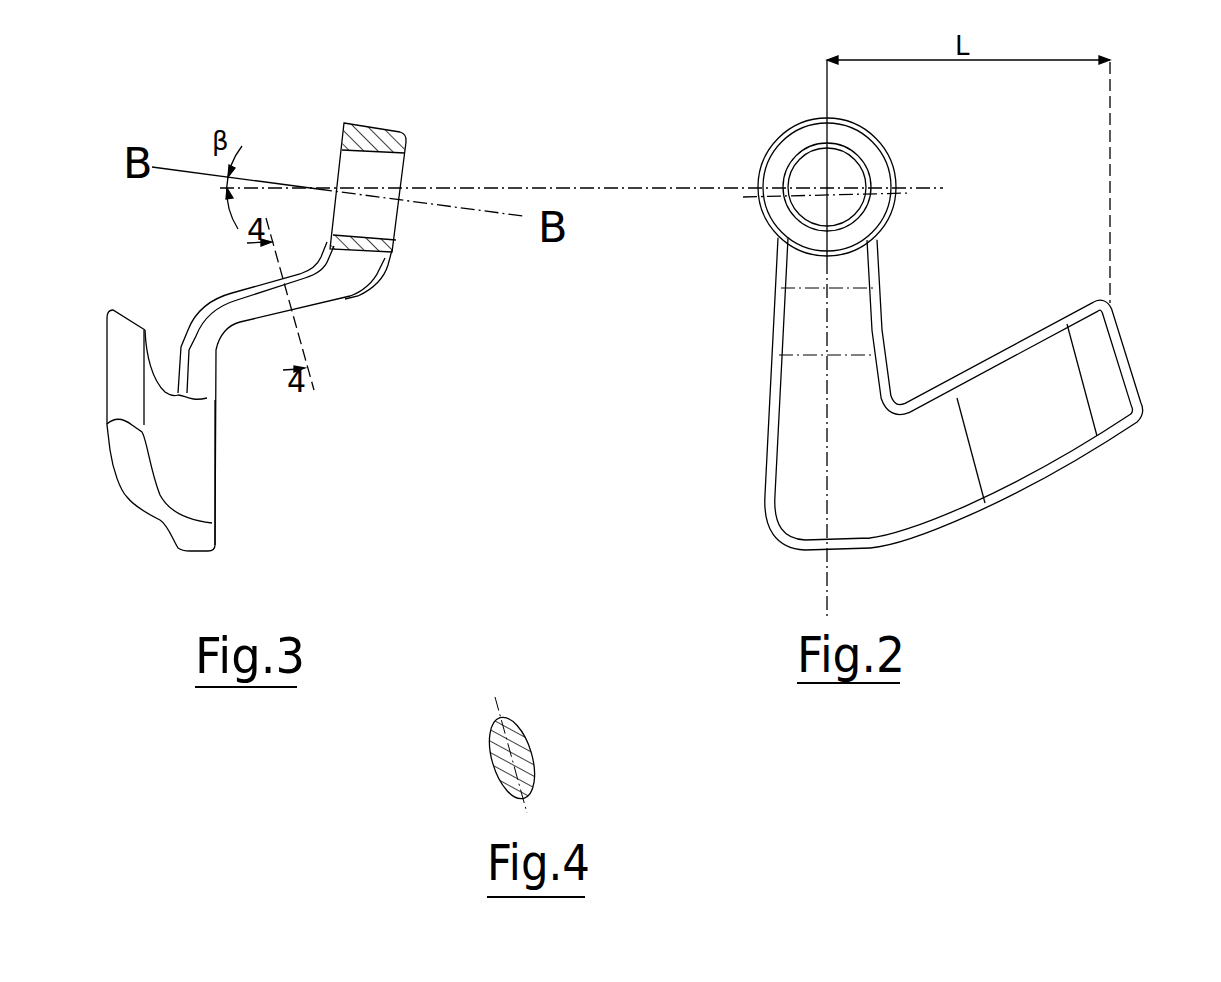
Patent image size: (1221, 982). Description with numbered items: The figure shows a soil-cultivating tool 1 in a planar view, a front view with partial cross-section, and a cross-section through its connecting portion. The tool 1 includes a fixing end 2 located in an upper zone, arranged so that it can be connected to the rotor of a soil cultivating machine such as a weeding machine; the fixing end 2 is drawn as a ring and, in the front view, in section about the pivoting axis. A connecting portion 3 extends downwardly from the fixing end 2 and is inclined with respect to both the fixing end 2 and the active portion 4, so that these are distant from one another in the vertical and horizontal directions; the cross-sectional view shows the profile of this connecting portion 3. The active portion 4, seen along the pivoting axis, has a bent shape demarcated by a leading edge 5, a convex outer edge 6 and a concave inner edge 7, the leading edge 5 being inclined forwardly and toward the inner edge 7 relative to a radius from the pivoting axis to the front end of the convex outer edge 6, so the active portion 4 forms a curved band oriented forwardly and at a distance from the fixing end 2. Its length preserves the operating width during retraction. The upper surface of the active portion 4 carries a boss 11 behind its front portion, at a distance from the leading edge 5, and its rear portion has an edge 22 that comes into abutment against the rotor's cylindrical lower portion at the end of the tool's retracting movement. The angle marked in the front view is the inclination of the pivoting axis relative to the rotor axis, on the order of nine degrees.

In FIG. 3, the tool 1 is at (180, 304).
In FIG. 2, the tool 1 is at (954, 255).
In FIG. 3, the fixing end 2 is at (393, 133).
In FIG. 2, the fixing end 2 is at (872, 165).
In FIG. 3, the connecting portion 3 is at (332, 281).
In FIG. 2, the connecting portion 3 is at (795, 320).
In FIG. 4, the connecting portion 3 is at (522, 743).
In FIG. 3, the active portion 4 is at (116, 517).
In FIG. 3, the leading edge 5 is at (120, 378).
In FIG. 2, the leading edge 5 is at (1134, 355).
In FIG. 2, the convex outer edge 6 is at (1088, 474).
In FIG. 2, the concave inner edge 7 is at (1028, 343).
In FIG. 3, the boss 11 is at (203, 477).
In FIG. 2, the edge 22 is at (758, 432).